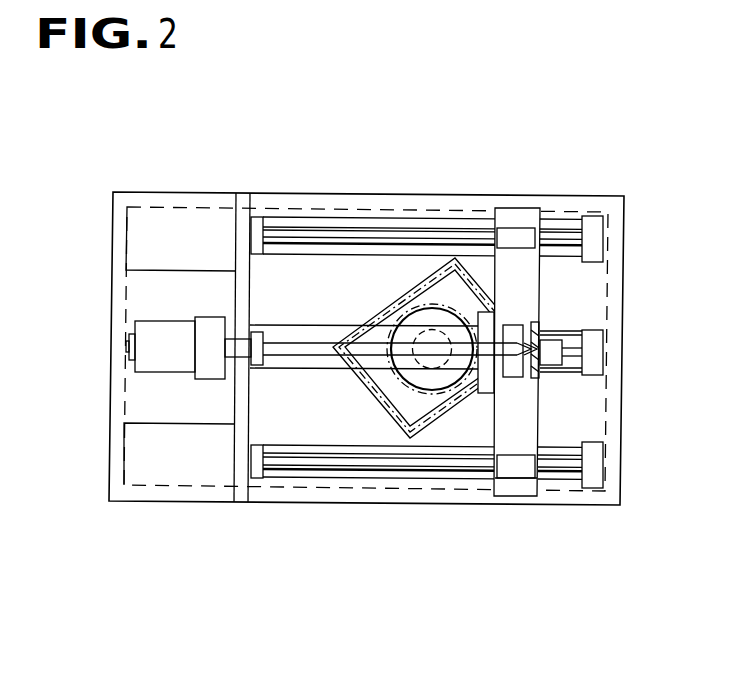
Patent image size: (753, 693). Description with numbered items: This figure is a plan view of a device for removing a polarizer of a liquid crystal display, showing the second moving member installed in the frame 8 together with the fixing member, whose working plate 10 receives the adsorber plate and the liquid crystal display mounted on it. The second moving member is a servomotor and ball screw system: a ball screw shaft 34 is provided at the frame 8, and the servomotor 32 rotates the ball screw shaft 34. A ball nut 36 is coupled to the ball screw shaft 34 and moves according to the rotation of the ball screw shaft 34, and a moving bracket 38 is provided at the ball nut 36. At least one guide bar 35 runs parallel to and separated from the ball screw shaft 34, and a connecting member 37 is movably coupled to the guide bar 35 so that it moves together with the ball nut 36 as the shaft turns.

The frame 8 is at (366, 307).
The working plate 10 is at (430, 149).
The servomotor 32 is at (145, 358).
The ball screw shaft 34 is at (393, 385).
The guide bar 35 is at (427, 342).
The ball nut 36 is at (596, 391).
The connecting member 37 is at (545, 398).
The moving bracket 38 is at (462, 439).